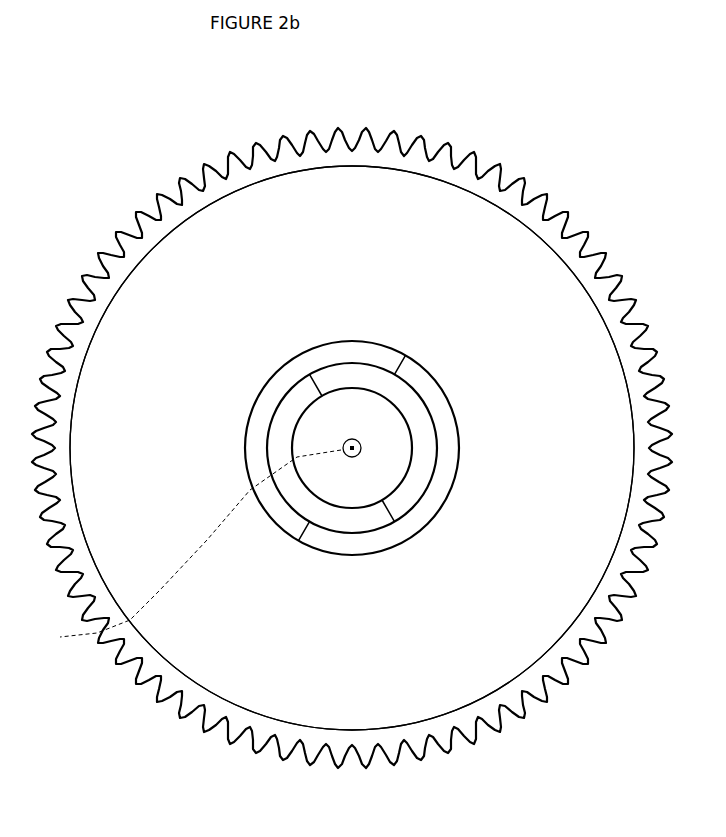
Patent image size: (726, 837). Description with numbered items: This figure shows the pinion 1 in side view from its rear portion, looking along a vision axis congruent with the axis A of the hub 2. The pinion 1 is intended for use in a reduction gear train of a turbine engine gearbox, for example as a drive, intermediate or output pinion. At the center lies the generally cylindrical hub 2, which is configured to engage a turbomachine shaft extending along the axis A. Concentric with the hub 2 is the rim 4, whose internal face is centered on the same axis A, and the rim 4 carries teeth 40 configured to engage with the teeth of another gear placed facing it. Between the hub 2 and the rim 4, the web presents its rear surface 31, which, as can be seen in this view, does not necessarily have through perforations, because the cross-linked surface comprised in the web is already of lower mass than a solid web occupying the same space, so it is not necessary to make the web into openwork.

The pinion 1 is at (352, 457).
The hub 2 is at (333, 346).
The rear surface 31 is at (178, 372).
The rim 4 is at (462, 186).
The teeth 40 is at (524, 176).
The axis A is at (192, 547).